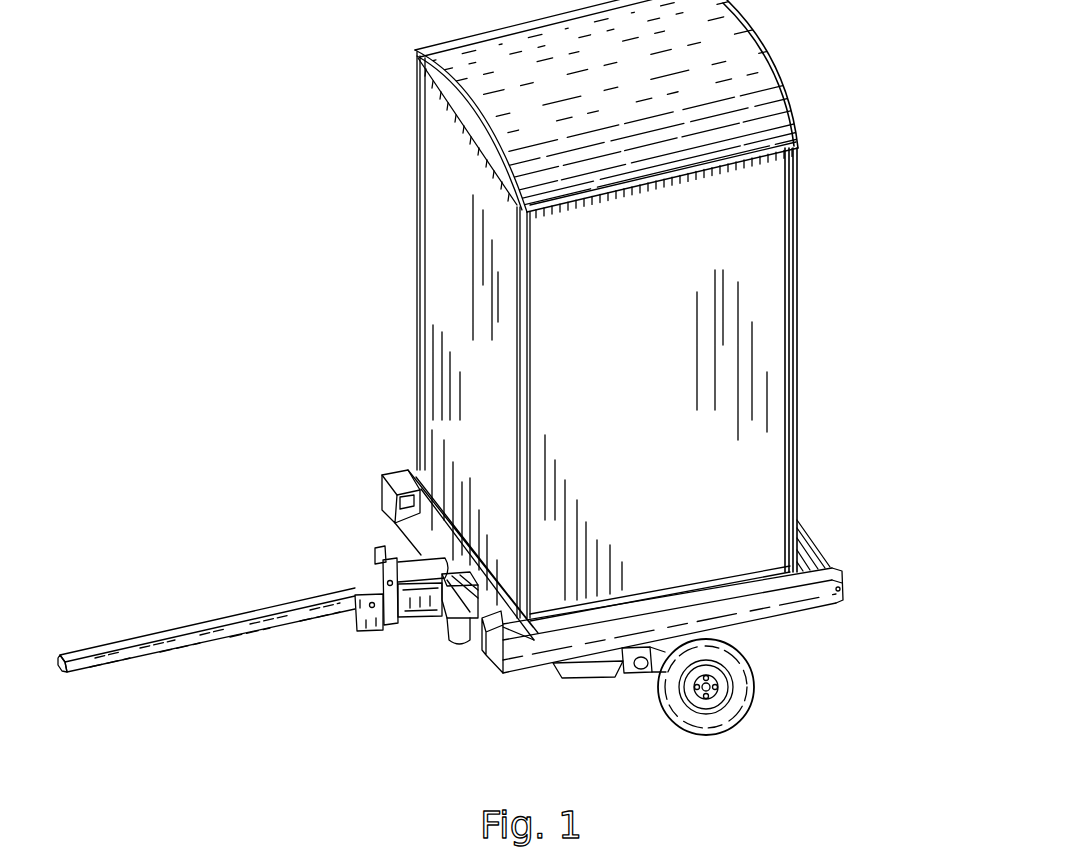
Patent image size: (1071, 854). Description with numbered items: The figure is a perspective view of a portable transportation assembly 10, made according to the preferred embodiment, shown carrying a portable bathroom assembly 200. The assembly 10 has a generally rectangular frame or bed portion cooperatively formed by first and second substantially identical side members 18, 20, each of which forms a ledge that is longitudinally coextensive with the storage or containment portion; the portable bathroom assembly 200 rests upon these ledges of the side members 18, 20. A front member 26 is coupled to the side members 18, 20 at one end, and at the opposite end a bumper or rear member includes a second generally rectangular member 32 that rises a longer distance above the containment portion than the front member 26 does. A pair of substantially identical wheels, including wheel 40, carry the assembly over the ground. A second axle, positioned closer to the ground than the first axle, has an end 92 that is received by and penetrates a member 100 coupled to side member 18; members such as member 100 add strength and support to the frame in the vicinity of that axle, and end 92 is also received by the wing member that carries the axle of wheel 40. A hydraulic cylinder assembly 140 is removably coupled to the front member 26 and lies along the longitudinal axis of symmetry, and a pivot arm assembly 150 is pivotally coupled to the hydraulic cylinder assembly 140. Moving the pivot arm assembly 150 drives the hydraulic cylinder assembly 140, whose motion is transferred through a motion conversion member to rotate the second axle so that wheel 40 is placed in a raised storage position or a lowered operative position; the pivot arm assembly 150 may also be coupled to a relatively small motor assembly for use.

The portable transportation assembly 10 is at (848, 414).
The first side member 18 is at (790, 592).
The second side member 20 is at (412, 472).
The front member 26 is at (452, 633).
The second generally rectangular member 32 is at (813, 533).
The wheel 40 is at (725, 700).
The end of second axle 92 is at (637, 670).
The member 100 is at (582, 663).
The hydraulic cylinder assembly 140 is at (362, 588).
The pivot arm assembly 150 is at (112, 667).
The portable bathroom assembly 200 is at (673, 488).